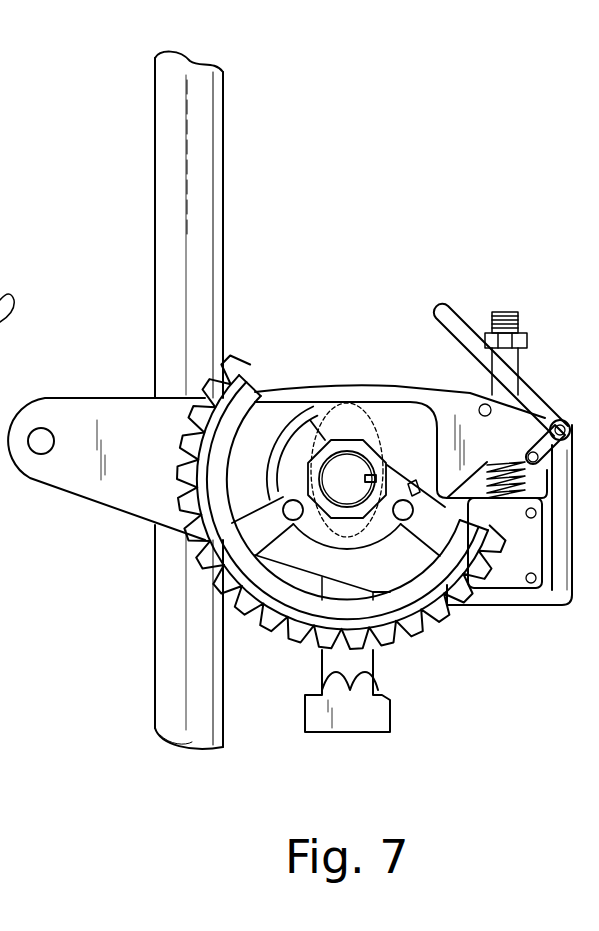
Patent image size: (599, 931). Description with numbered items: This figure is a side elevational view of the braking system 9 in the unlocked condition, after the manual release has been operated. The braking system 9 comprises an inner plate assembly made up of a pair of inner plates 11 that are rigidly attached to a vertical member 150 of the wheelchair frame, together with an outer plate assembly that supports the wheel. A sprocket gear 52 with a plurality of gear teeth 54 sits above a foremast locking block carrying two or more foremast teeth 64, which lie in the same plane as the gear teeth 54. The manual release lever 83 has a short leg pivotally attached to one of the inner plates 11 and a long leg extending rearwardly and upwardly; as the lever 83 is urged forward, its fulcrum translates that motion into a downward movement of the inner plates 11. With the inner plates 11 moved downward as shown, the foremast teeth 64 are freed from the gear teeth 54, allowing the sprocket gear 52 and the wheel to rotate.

The vertical member 150 is at (228, 238).
The lever 83 is at (0, 328).
The inner plate 11 is at (398, 385).
The sprocket gear 52 is at (285, 618).
The gear teeth 54 is at (320, 648).
The foremast teeth 64 is at (372, 665).
The braking system 9 is at (291, 522).